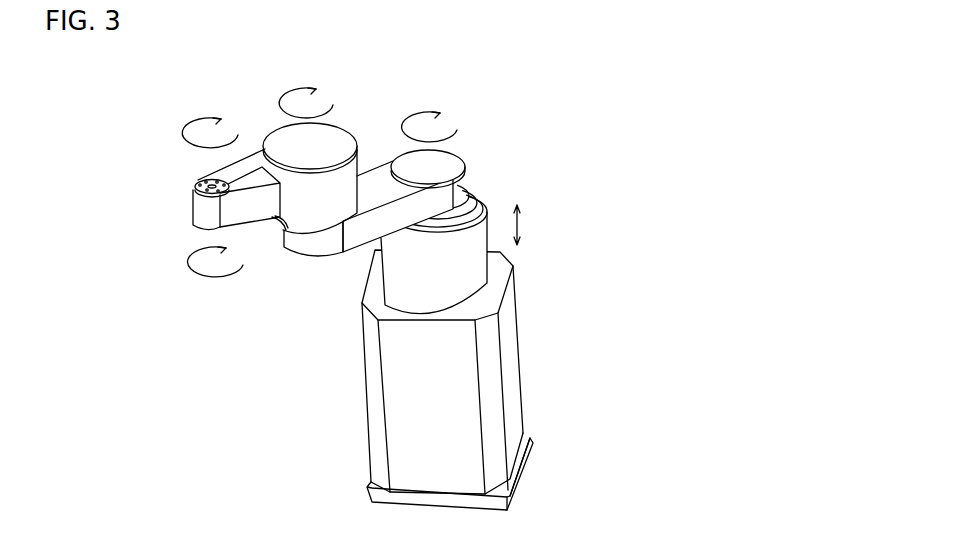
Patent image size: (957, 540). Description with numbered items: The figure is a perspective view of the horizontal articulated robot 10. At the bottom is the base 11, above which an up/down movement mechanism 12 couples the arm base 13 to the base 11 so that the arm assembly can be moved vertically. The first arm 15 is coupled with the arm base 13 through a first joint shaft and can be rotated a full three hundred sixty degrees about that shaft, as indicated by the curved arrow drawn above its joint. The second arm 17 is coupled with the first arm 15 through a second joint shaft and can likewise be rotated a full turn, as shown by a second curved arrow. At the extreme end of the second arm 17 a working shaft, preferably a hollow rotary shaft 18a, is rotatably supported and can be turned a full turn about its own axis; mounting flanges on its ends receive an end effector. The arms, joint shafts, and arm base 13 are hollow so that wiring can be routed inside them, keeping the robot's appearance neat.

The horizontal articulated robot 10 is at (493, 135).
The base 11 is at (533, 435).
The up/down movement mechanism 12 is at (345, 333).
The arm base 13 is at (467, 265).
The first arm 15 is at (430, 203).
The second arm 17 is at (205, 217).
The hollow rotary shaft 18a is at (197, 185).